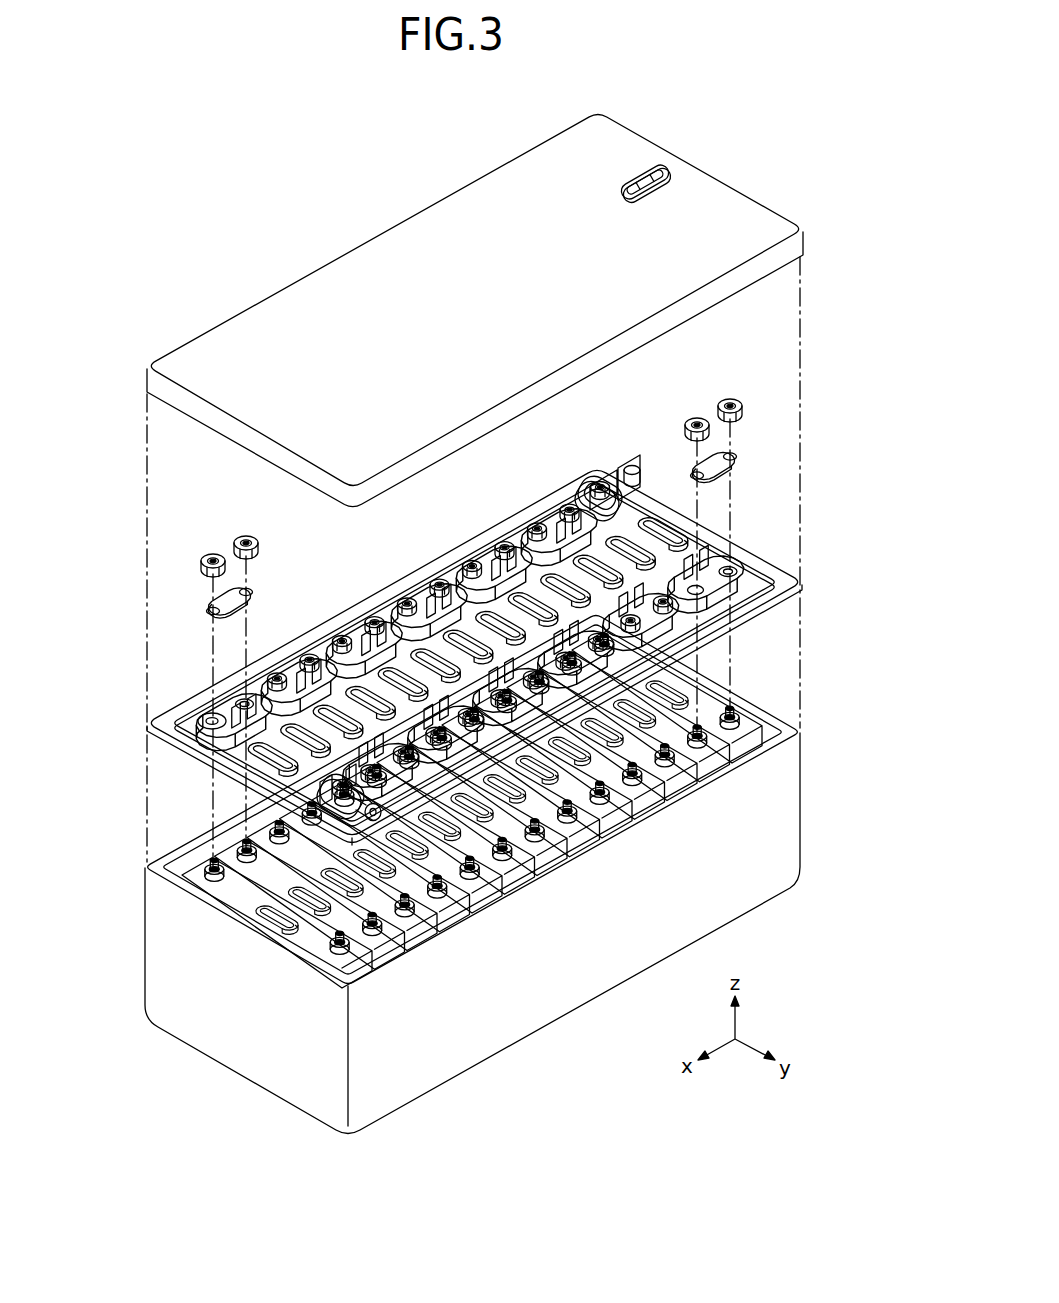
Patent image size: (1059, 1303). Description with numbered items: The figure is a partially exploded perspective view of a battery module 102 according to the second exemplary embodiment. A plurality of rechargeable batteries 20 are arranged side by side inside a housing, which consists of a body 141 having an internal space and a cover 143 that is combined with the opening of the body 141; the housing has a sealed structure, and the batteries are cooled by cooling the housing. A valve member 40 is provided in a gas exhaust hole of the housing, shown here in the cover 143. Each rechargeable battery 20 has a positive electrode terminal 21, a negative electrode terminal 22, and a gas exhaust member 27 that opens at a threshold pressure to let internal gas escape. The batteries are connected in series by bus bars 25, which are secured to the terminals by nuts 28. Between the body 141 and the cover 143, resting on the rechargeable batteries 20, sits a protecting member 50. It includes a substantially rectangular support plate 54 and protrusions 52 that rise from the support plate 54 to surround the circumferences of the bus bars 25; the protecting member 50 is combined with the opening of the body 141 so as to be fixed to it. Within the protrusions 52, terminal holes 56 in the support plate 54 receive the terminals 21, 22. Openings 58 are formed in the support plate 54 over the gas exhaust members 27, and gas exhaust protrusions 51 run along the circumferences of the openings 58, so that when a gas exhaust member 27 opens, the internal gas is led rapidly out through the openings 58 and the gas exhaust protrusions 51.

The battery module 102 is at (381, 133).
The cover 143 is at (358, 268).
The valve member 40 is at (660, 180).
The body 141 is at (488, 1040).
The rechargeable battery 20 is at (264, 929).
The positive electrode terminal 21 is at (208, 866).
The negative electrode terminal 22 is at (335, 940).
The gas exhaust member 27 is at (257, 903).
The bus bar 25 is at (740, 450).
The nut 28 is at (736, 396).
The protecting member 50 is at (760, 551).
The gas exhaust protrusion 51 is at (242, 756).
The protrusion 52 is at (198, 727).
The support plate 54 is at (237, 747).
The terminal hole 56 is at (213, 678).
The opening 58 is at (237, 685).